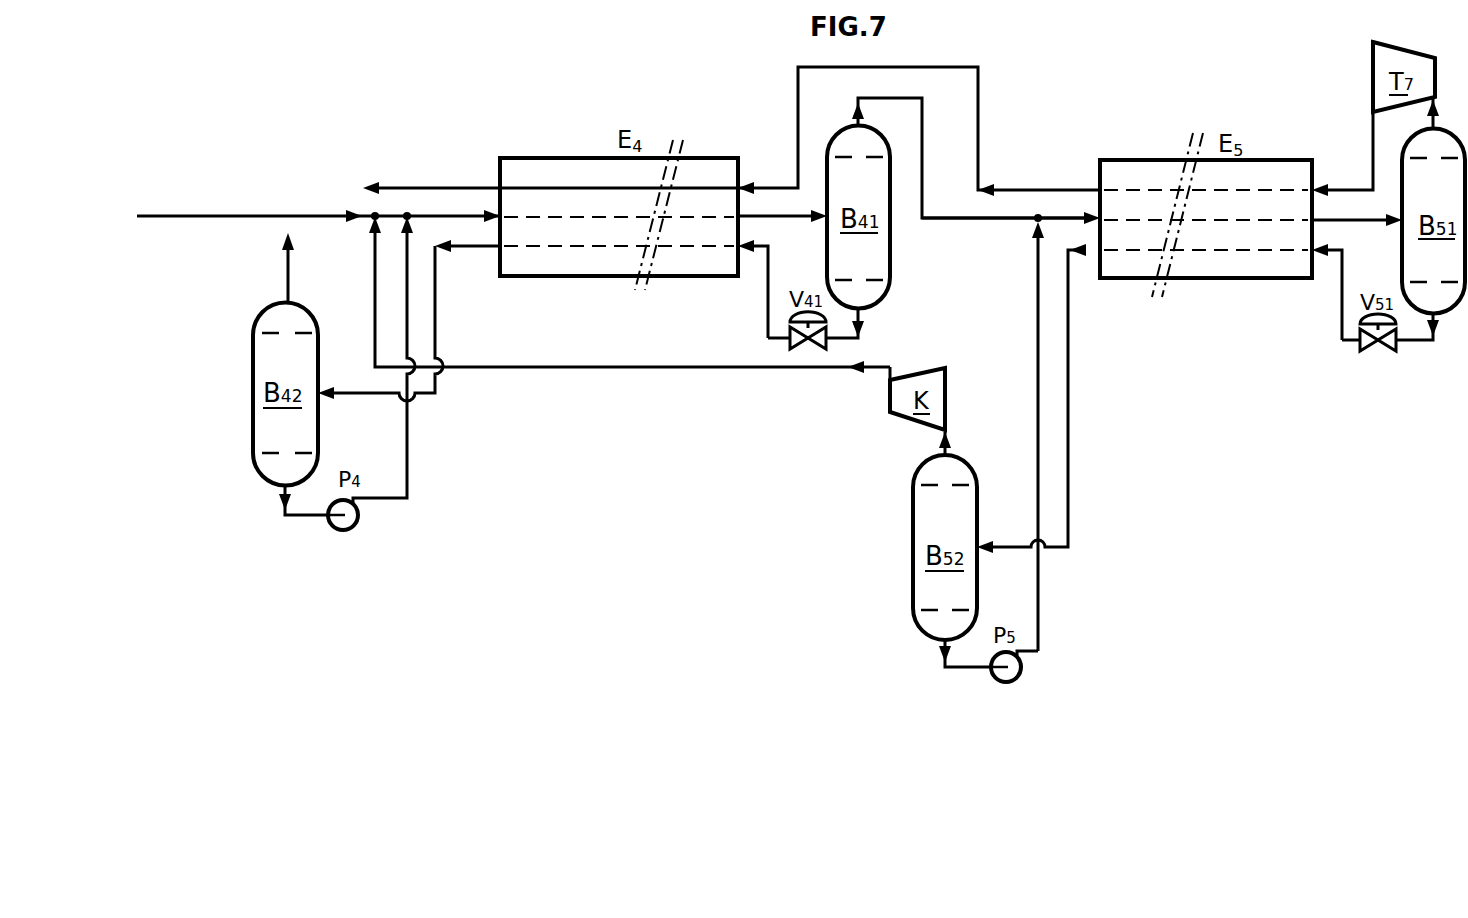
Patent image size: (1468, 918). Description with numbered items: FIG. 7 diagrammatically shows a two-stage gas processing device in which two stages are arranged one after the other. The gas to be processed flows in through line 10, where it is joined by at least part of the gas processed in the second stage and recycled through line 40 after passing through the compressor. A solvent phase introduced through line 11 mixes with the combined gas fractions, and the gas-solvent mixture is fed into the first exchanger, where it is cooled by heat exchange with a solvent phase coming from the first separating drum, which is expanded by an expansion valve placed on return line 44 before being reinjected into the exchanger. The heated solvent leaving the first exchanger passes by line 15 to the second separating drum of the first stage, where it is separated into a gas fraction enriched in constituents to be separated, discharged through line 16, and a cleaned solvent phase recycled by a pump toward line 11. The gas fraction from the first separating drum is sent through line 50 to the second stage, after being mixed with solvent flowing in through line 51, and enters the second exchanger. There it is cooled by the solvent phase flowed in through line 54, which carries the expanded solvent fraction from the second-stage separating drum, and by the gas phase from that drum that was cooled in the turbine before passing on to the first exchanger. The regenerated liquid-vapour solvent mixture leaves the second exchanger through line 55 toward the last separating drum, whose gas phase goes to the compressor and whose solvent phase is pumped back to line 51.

The line 10 is at (273, 213).
The line 11 is at (408, 449).
The condensed liquid stream from exchanger E4 to separator B42 15 is at (437, 292).
The line 16 is at (287, 258).
The line 40 is at (374, 266).
The return line 44 is at (767, 307).
The line 50 is at (990, 231).
The line 51 is at (1037, 345).
The return line 54 is at (1340, 290).
The line 55 is at (1070, 347).